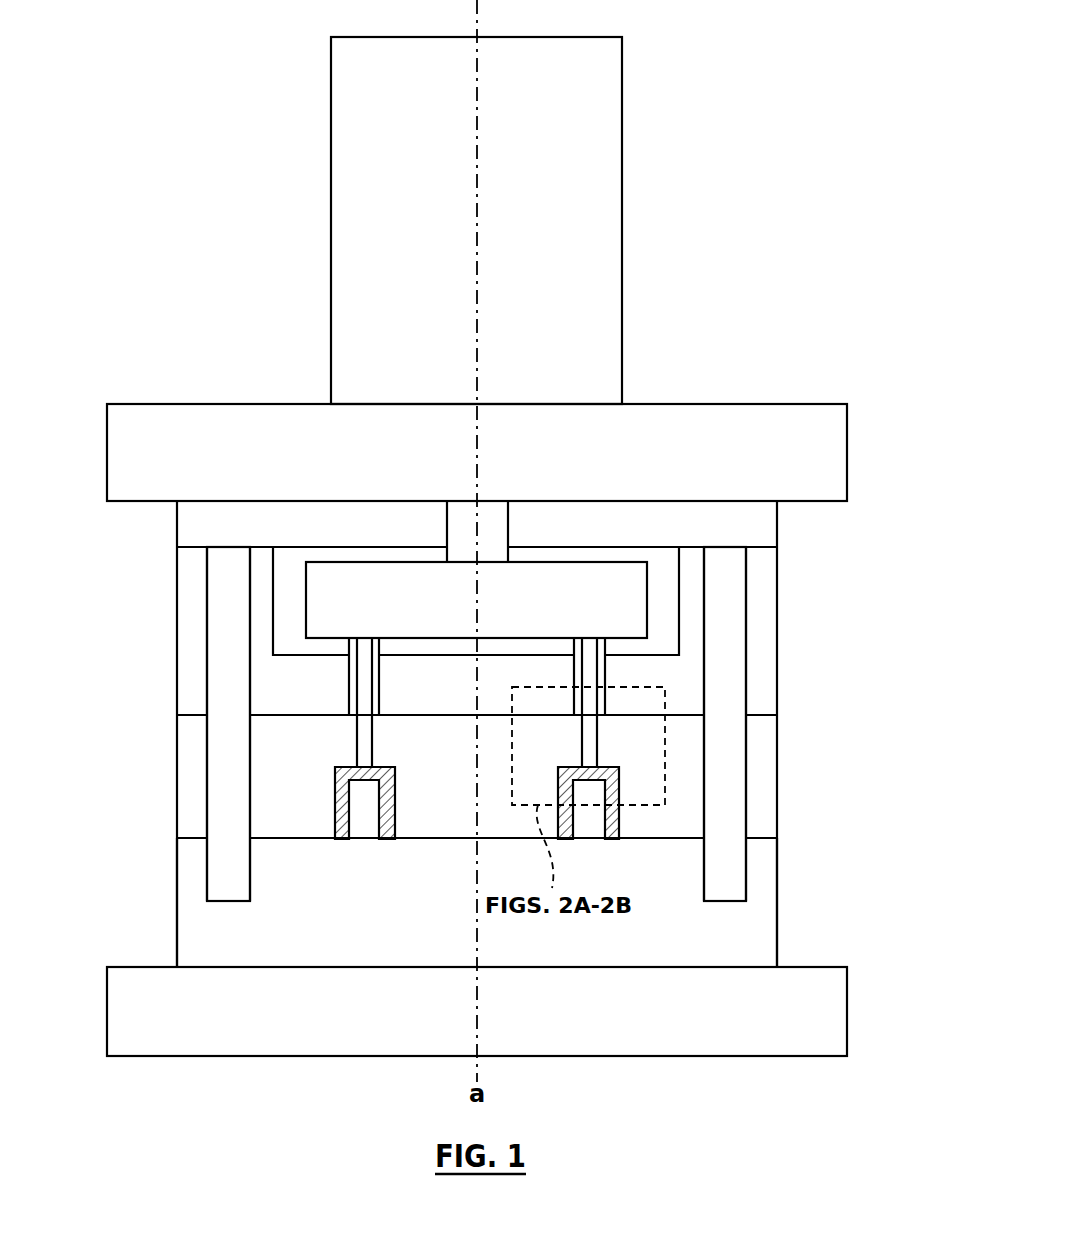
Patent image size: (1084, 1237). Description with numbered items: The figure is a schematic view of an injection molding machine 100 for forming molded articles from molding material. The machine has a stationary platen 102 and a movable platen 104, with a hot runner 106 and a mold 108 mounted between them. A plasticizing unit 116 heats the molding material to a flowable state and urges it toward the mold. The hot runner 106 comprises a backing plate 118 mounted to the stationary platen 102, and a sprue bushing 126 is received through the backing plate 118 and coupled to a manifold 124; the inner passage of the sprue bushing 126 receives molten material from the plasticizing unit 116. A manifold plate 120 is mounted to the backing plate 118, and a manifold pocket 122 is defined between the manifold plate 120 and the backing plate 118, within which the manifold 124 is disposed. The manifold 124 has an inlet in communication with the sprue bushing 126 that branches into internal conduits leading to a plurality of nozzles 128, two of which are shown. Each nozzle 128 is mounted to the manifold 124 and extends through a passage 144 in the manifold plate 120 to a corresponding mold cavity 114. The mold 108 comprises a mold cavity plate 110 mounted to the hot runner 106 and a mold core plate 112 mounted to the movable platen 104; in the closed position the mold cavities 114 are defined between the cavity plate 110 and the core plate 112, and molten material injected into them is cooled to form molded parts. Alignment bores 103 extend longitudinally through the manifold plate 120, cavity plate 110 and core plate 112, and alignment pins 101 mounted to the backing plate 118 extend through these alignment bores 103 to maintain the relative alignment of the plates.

The injection molding machine 100 is at (240, 272).
The plasticizing unit 116 is at (586, 105).
The stationary platen 102 is at (829, 442).
The sprue bushing 126 is at (495, 510).
The backing plate 118 is at (765, 533).
The manifold pocket 122 is at (665, 582).
The manifold 124 is at (637, 595).
The passage 144 is at (345, 680).
The nozzles 128 is at (363, 742).
The alignment pins 101 is at (227, 617).
The alignment bores 103 is at (207, 673).
The hot runner 106 is at (795, 645).
The manifold plate 120 is at (762, 698).
The mold 108 is at (796, 792).
The mold cavity plate 110 is at (762, 823).
The mold cavities 114 is at (337, 820).
The mold core plate 112 is at (768, 950).
The movable platen 104 is at (832, 1007).